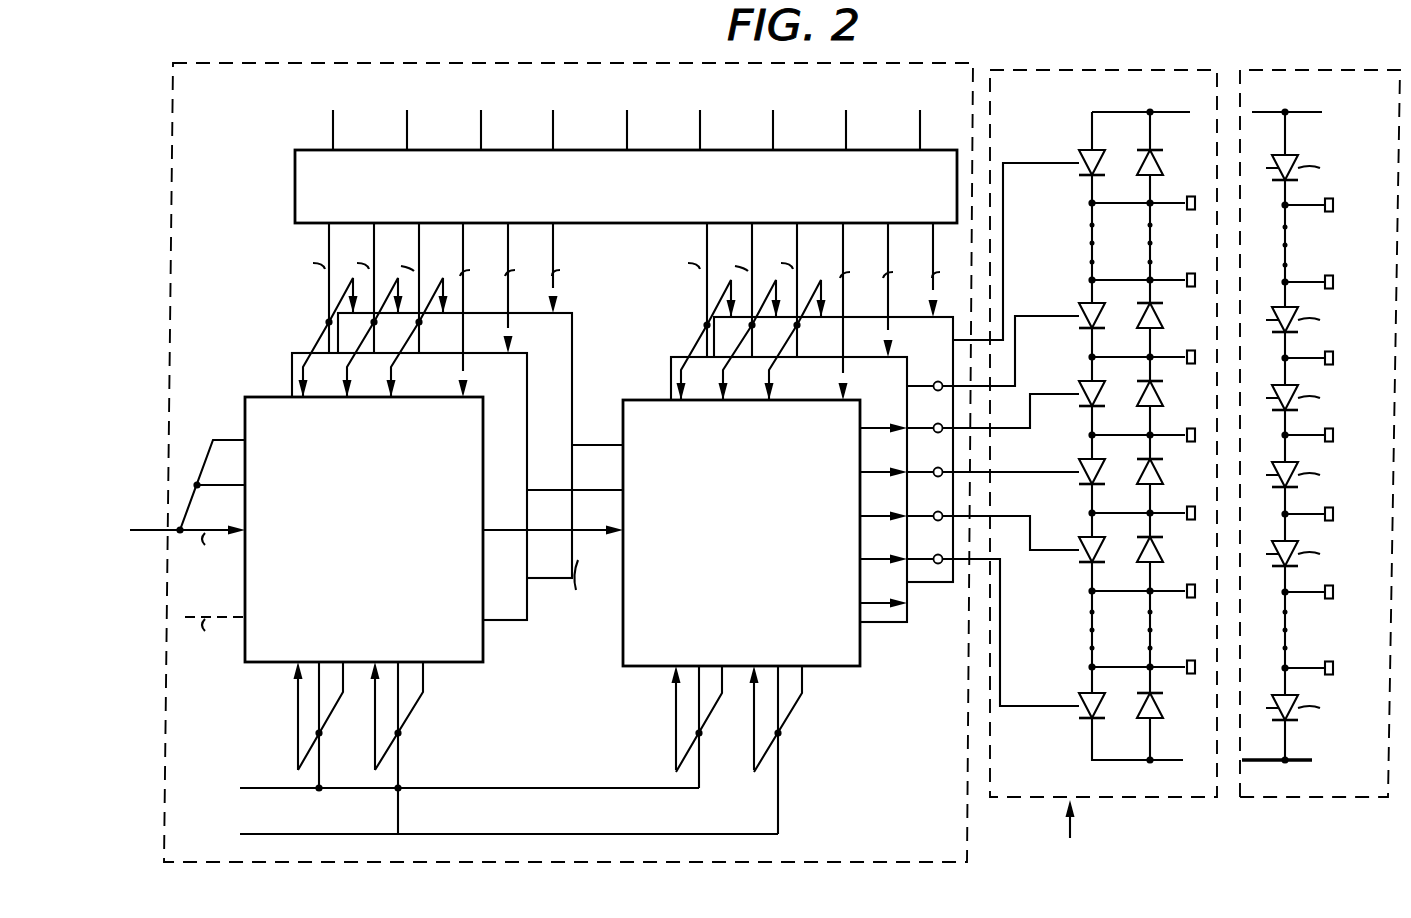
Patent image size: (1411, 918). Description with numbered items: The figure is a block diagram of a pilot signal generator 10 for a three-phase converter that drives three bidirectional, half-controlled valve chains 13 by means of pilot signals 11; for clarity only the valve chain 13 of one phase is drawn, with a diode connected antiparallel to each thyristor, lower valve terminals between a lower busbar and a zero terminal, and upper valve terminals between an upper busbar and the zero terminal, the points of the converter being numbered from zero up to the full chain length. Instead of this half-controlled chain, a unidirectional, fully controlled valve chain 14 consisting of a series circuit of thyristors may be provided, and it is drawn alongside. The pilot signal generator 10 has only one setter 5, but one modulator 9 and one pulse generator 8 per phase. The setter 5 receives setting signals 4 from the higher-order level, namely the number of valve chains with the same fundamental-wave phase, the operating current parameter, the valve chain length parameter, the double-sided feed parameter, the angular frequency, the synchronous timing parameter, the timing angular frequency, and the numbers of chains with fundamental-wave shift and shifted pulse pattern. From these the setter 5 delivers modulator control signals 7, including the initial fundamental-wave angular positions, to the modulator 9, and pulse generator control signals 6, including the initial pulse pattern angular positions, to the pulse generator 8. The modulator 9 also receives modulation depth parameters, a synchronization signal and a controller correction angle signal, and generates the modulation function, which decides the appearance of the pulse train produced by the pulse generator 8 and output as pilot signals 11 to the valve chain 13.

The setting signals 4 is at (592, 97).
The setter 5 is at (296, 188).
The pulse generator control signals 6 is at (796, 528).
The modulator control signals 7 is at (454, 535).
The pulse generator 8 is at (923, 585).
The modulator 9 is at (540, 578).
The pilot signal generator 10 is at (967, 828).
The pilot signals 11 is at (997, 583).
The bidirectional, half-controlled valve chain 13 is at (1183, 797).
The unidirectional, fully controlled valve chain 14 is at (1338, 797).